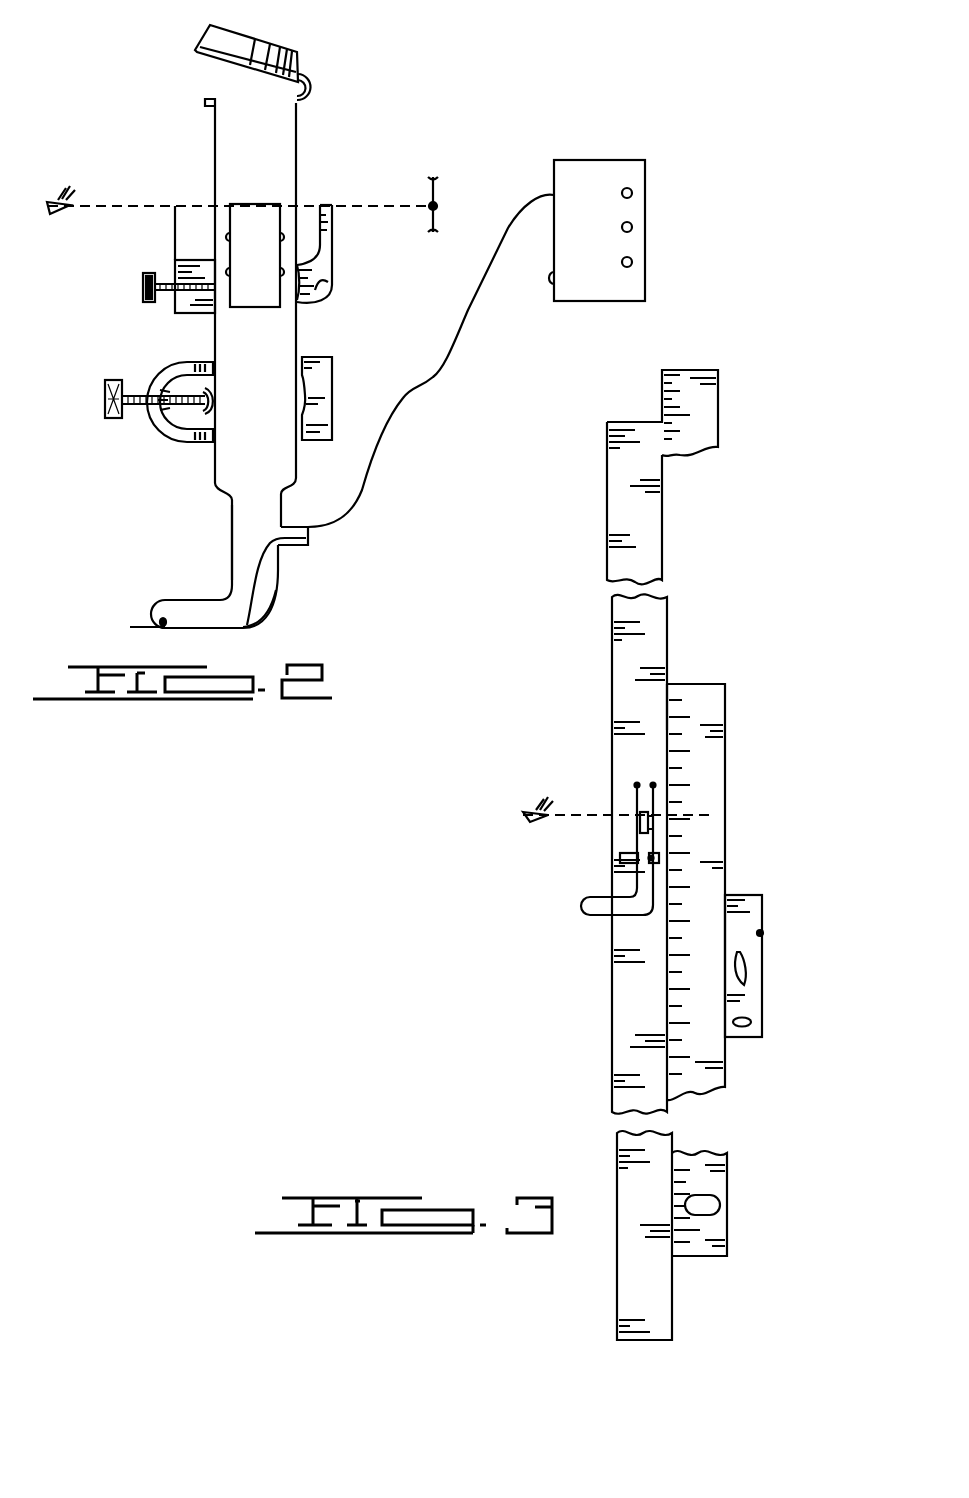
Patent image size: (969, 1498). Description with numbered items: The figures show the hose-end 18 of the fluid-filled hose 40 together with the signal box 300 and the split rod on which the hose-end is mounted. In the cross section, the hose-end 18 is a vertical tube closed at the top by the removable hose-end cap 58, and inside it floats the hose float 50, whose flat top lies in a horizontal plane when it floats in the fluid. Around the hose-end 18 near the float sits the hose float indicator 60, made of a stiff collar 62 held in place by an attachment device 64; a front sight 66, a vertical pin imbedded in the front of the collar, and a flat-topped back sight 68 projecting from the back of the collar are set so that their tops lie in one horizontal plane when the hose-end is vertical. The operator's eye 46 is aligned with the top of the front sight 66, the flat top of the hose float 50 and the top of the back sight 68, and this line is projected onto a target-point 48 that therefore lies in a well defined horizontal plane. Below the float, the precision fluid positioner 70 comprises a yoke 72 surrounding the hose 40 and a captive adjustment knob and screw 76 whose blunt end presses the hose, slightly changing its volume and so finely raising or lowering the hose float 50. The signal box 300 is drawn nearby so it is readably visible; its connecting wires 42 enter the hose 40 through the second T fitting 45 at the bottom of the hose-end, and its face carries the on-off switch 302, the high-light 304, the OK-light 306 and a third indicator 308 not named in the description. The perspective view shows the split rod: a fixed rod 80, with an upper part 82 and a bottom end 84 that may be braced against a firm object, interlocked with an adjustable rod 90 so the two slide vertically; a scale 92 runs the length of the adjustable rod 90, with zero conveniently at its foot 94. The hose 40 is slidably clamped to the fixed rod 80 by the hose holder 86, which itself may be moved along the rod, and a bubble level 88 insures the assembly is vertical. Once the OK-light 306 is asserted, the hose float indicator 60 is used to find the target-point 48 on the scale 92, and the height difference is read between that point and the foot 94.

In FIG. 2, the hose-end 18 is at (232, 520).
In FIG. 2, the hose 40 is at (283, 613).
In FIG. 2, the connecting wires 42 is at (362, 493).
In FIG. 2, the second T fitting 45 is at (283, 560).
In FIG. 3, the second T fitting 45 is at (523, 812).
In FIG. 2, the operator's eye 46 is at (66, 216).
In FIG. 2, the target-point 48 is at (438, 204).
In FIG. 2, the hose float 50 is at (260, 232).
In FIG. 3, the hose float 50 is at (640, 823).
In FIG. 2, the hose-end cap 58 is at (280, 44).
In FIG. 2, the hose float indicator 60 is at (178, 313).
In FIG. 2, the collar 62 is at (333, 287).
In FIG. 2, the attachment device 64 is at (143, 287).
In FIG. 2, the front sight 66 is at (175, 225).
In FIG. 2, the back sight 68 is at (333, 220).
In FIG. 2, the precision fluid positioner 70 is at (176, 440).
In FIG. 2, the yoke 72 is at (333, 365).
In FIG. 2, the adjustment knob and screw 76 is at (105, 400).
In FIG. 3, the fixed rod 80 is at (612, 637).
In FIG. 3, the upper rail section 82 is at (607, 422).
In FIG. 3, the fixed rod's bottom end 84 is at (632, 1340).
In FIG. 3, the hose holder 86 is at (622, 860).
In FIG. 3, the bubble level 88 is at (762, 933).
In FIG. 3, the adjustable rod 90 is at (724, 745).
In FIG. 3, the scale 92 is at (672, 728).
In FIG. 3, the foot 94 is at (735, 1255).
In FIG. 2, the signal box 300 is at (613, 160).
In FIG. 2, the on-off switch 302 is at (552, 288).
In FIG. 2, the high-light 304 is at (632, 191).
In FIG. 2, the OK-light 306 is at (632, 226).
In FIG. 2, the indicator 308 is at (632, 261).